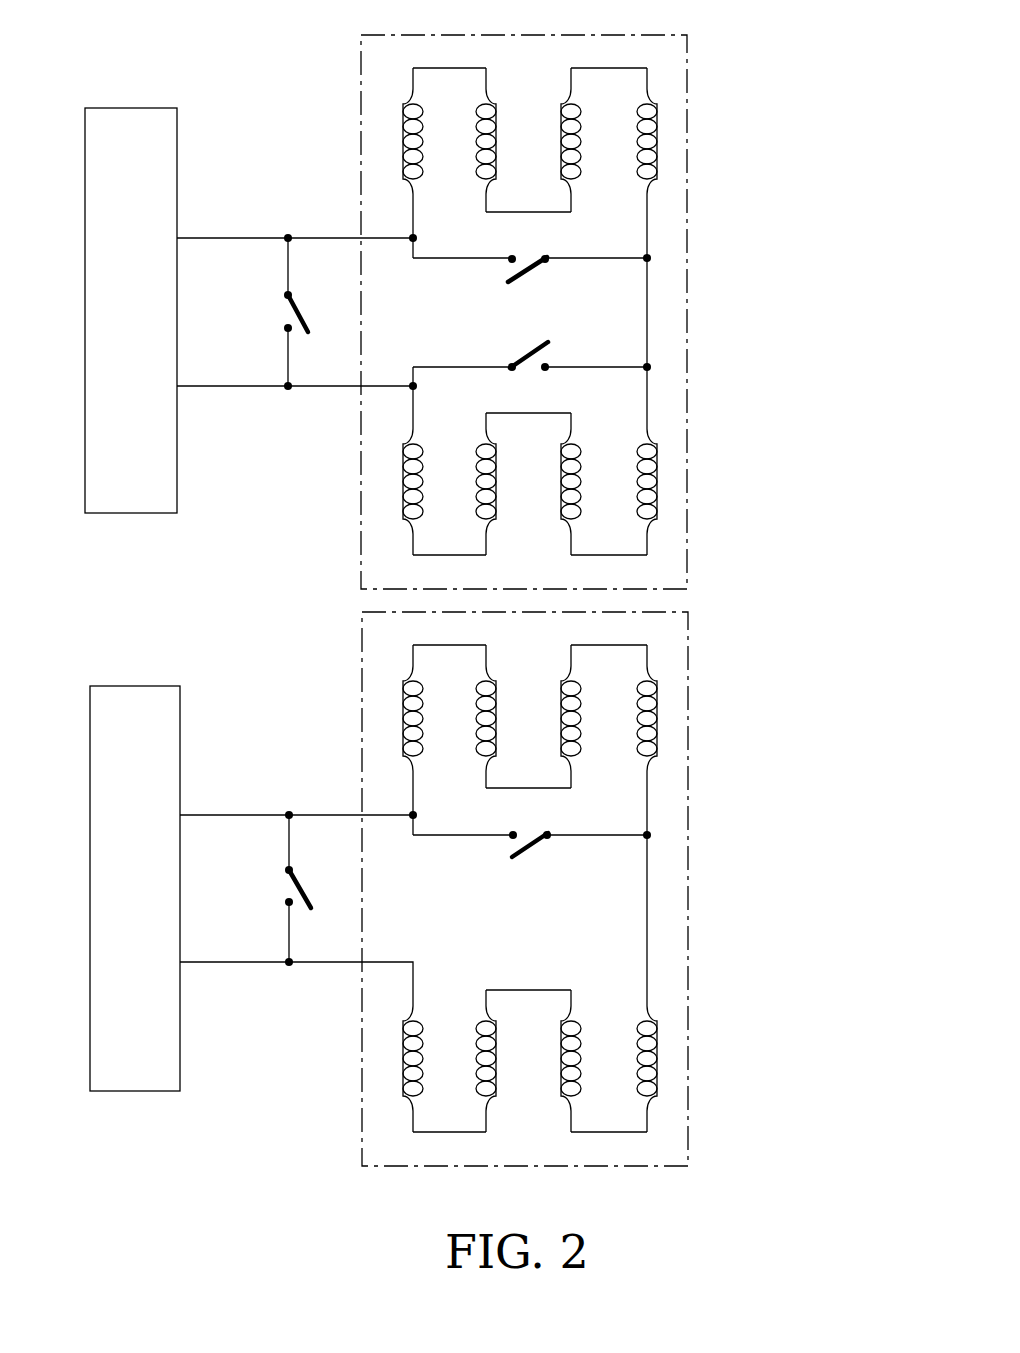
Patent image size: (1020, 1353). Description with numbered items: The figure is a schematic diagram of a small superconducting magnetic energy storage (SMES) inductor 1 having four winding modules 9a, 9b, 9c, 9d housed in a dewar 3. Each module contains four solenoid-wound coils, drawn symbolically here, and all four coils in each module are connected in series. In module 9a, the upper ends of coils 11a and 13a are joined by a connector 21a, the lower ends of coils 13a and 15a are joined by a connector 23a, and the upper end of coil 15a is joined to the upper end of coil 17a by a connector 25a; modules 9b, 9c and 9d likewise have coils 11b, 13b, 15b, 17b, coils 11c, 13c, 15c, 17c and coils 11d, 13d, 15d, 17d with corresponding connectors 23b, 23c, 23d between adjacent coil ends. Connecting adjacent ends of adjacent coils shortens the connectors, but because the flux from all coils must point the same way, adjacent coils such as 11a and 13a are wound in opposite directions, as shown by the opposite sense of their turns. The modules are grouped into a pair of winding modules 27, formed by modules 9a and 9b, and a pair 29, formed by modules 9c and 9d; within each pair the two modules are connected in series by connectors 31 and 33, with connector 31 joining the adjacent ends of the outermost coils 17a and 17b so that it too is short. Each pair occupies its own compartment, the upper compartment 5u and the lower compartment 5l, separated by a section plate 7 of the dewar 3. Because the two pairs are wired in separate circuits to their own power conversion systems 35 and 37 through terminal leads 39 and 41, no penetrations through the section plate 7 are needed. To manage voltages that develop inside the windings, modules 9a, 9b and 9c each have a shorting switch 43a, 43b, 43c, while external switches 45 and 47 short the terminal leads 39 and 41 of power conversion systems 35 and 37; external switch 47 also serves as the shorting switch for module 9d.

The SMES inductor 1 is at (790, 62).
The dewar 3 is at (700, 1123).
The upper compartment 5u is at (676, 567).
The lower compartment 5l is at (687, 1166).
The section plate 7 is at (655, 603).
The winding module 9a is at (686, 148).
The winding module 9b is at (686, 477).
The winding module 9c is at (686, 725).
The winding module 9d is at (686, 1057).
The coil 11a is at (402, 128).
The coil 11b is at (402, 505).
The coil 11c is at (402, 708).
The coil 11d is at (402, 1082).
The coil 13a is at (477, 140).
The coil 13b is at (477, 468).
The coil 13c is at (477, 718).
The coil 13d is at (477, 1043).
The coil 15a is at (562, 118).
The coil 15b is at (562, 495).
The coil 15c is at (562, 694).
The coil 15d is at (562, 1073).
The coil 17a is at (658, 130).
The coil 17b is at (658, 509).
The coil 17c is at (658, 708).
The coil 17d is at (658, 1088).
The connector 21a is at (452, 68).
The connector 23a is at (560, 212).
The connector 23b is at (520, 413).
The connector 23c is at (560, 788).
The connector 23d is at (520, 990).
The connector 25a is at (606, 68).
The pair of winding modules 27 is at (778, 180).
The pair of winding modules 29 is at (778, 760).
The connector 31 is at (647, 325).
The connector 33 is at (647, 900).
The power conversion system 35 is at (122, 108).
The power conversion system 37 is at (122, 686).
The terminal leads 39 is at (200, 238).
The terminal leads 41 is at (200, 815).
The shorting switch 43a is at (521, 276).
The shorting switch 43b is at (528, 347).
The shorting switch 43c is at (522, 850).
The external switch 45 is at (303, 318).
The external switch 47 is at (305, 892).